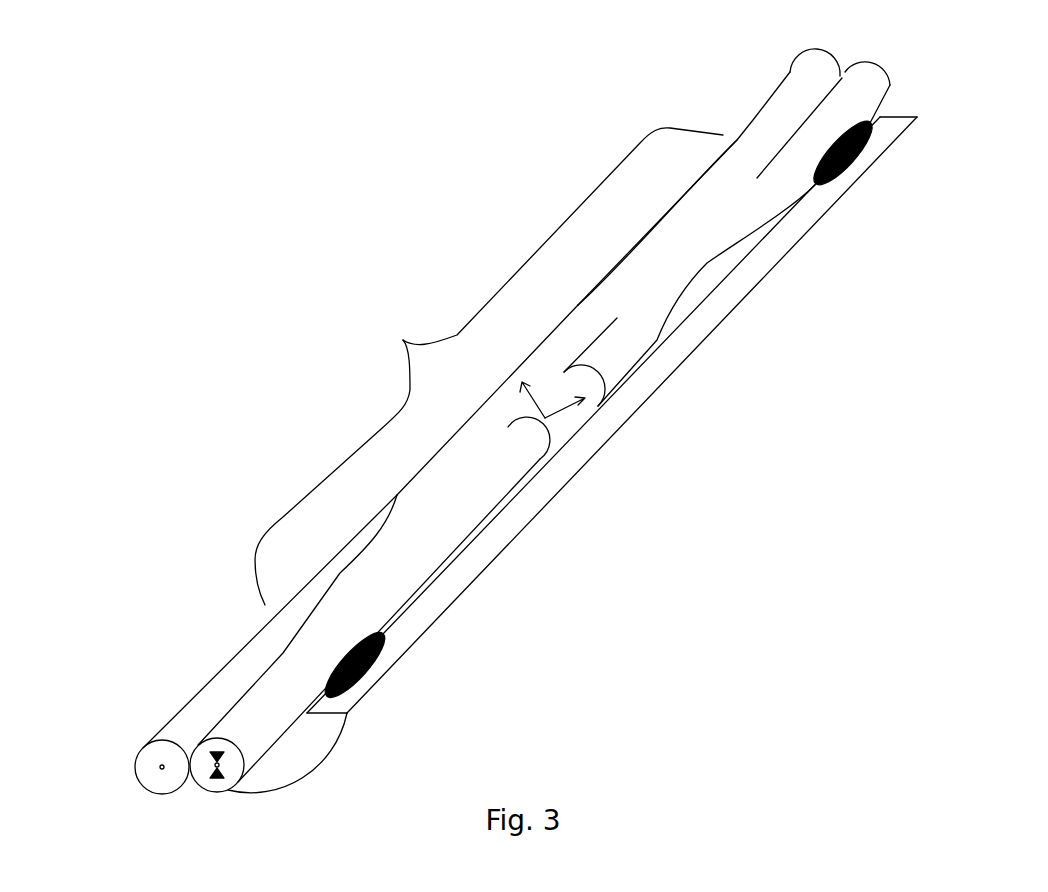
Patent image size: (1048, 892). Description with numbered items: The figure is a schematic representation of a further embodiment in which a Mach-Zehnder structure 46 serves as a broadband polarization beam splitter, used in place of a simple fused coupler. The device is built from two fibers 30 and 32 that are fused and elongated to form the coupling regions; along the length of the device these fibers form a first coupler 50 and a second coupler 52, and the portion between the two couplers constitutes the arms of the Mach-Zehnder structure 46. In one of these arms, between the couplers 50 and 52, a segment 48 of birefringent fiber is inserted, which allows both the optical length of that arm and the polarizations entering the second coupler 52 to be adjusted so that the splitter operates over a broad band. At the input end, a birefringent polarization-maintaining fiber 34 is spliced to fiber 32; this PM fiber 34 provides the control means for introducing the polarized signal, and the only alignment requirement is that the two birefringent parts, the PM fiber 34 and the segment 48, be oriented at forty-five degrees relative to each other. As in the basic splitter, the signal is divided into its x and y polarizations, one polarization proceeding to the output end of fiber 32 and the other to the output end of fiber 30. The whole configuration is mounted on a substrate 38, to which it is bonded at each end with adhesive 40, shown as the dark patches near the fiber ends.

The fiber 30 is at (790, 87).
The fiber 32 is at (873, 100).
The birefringent PM fiber 34 is at (277, 723).
The substrate 38 is at (673, 350).
The adhesive 40 is at (855, 162).
The Mach-Zehnder structure 46 is at (489, 366).
The segment of birefringent fiber 48 is at (575, 418).
The coupler 50 is at (400, 577).
The second coupler 52 is at (703, 258).